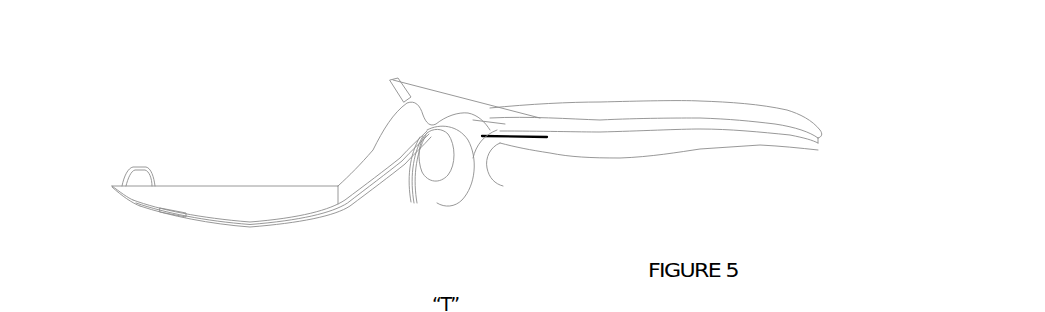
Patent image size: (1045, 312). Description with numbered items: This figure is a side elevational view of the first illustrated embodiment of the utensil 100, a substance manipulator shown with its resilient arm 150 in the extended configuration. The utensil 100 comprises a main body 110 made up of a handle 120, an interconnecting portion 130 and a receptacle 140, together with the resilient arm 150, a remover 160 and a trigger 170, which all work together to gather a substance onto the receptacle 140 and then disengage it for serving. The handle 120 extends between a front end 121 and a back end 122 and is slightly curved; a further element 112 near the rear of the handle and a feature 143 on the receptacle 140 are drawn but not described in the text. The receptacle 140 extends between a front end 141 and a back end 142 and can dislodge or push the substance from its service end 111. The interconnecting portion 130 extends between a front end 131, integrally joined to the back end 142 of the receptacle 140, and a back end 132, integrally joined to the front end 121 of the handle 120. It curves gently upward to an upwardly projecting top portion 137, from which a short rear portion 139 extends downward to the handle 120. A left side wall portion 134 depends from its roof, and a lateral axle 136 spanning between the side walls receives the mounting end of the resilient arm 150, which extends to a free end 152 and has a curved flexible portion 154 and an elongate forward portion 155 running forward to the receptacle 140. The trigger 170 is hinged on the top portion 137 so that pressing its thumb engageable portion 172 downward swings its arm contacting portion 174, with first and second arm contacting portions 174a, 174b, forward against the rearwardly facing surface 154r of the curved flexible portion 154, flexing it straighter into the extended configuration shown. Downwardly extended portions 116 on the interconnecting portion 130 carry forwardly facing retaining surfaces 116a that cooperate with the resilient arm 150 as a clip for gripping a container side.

The utensil 100 is at (302, 109).
The main body 110 is at (371, 168).
The service end 111 is at (110, 187).
The second arm end 112 is at (818, 152).
The downwardly extended portions 116 is at (485, 193).
The forwardly facing retaining surfaces 116a is at (475, 181).
The handle 120 is at (665, 113).
The front end of the handle 121 is at (552, 130).
The back end of the handle 122 is at (817, 138).
The interconnecting portion 130 is at (488, 128).
The front end of the interconnecting portion 131 is at (352, 200).
The back end of the interconnecting portion 132 is at (488, 127).
The left side wall portion 134 is at (463, 135).
The lateral axle 136 is at (424, 110).
The upwardly projecting top portion 137 is at (453, 120).
The short rear portion 139 is at (497, 128).
The receptacle 140 is at (227, 207).
The front end of the receptacle 141 is at (112, 186).
The back end of the receptacle 142 is at (331, 208).
The tab 143 is at (186, 214).
The resilient arm 150 is at (271, 225).
The free end 152 is at (135, 205).
The curved flexible portion 154 is at (394, 185).
The rearwardly facing surface 154r is at (403, 173).
The elongate forward portion 155 is at (192, 215).
The remover 160 is at (132, 180).
The trigger 170 is at (403, 92).
The thumb engageable portion 172 is at (488, 108).
The arm contacting portion 174 is at (412, 172).
The first arm contacting portion 174a is at (412, 172).
The second arm contacting portion 174b is at (378, 199).